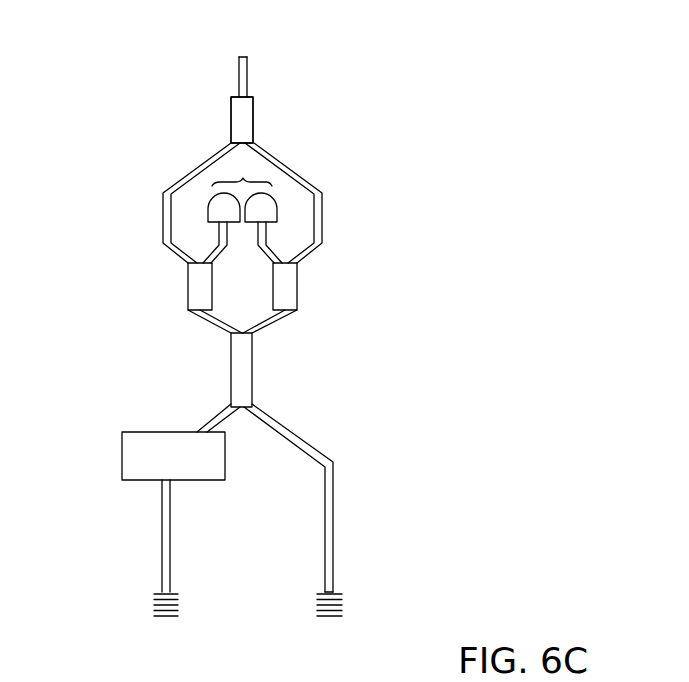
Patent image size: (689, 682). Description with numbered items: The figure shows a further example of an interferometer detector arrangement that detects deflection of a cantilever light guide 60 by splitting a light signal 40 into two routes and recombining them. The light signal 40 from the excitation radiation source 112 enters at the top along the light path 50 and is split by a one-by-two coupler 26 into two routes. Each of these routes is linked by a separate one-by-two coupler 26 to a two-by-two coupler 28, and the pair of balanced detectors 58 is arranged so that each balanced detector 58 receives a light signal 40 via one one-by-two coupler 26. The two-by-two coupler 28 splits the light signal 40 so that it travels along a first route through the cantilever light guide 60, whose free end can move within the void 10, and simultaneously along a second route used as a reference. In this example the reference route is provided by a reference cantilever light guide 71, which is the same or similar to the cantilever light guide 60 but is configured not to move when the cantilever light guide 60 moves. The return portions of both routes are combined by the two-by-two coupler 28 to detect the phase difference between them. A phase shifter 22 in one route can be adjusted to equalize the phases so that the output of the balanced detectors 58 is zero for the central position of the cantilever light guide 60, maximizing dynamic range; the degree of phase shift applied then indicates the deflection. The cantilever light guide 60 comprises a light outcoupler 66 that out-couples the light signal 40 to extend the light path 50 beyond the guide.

The excitation radiation source 112 is at (217, 75).
The light signal 40 is at (247, 53).
The light path 50 is at (253, 77).
The 1×2 coupler 26 is at (260, 118).
The balanced detectors 58 is at (245, 175).
The 2×2 coupler 28 is at (258, 373).
The phase shifter 22 is at (117, 455).
The reference cantilever light guide 71 is at (150, 547).
The cantilever light guide 60 is at (340, 525).
The void 10 is at (360, 603).
The light outcoupler 66 is at (147, 622).